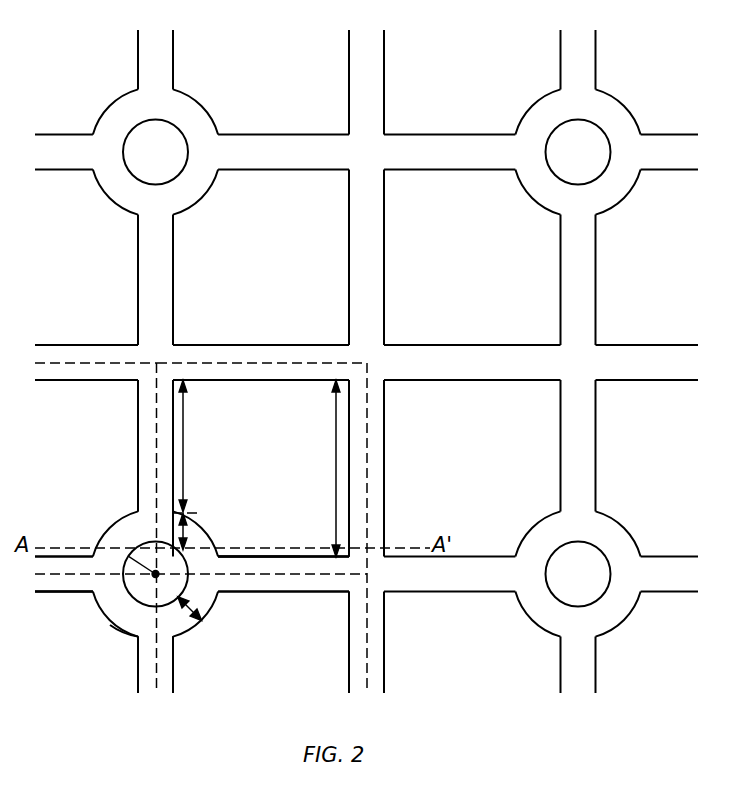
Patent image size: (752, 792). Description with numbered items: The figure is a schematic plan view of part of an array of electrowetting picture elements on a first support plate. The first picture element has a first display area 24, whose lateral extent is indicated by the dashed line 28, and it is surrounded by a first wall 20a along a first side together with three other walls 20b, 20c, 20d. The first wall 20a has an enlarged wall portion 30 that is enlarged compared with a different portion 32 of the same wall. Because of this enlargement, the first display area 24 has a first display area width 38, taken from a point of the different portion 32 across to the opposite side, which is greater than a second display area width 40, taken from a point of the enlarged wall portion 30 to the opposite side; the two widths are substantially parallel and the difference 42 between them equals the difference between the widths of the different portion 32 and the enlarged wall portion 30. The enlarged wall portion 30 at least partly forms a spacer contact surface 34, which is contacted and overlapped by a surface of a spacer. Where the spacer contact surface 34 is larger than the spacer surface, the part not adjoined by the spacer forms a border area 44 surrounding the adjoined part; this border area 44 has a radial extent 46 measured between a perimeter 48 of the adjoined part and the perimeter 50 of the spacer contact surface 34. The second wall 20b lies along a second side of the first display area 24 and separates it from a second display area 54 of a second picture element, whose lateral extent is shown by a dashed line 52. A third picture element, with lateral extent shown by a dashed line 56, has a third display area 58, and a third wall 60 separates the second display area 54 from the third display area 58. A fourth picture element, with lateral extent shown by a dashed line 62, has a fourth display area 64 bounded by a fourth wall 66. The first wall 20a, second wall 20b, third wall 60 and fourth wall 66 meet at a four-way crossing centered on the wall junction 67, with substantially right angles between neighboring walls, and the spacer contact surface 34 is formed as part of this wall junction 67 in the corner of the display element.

The first wall 20a is at (308, 556).
The second wall 20b is at (173, 418).
The third wall of first display area 20c is at (238, 382).
The fourth wall of first display area 20d is at (350, 436).
The first display area 24 is at (300, 466).
The dashed line 28 is at (247, 362).
The enlarged wall portion 30 is at (205, 527).
The different portion of the first wall 32 is at (258, 556).
The spacer contact surface 34 is at (175, 638).
The first display area width 38 is at (333, 410).
The second display area width 40 is at (185, 456).
The difference between display area widths 42 is at (178, 548).
The border area 44 is at (190, 629).
The radial extent 46 is at (200, 608).
The perimeter of the spacer-adjoined part 48 is at (113, 625).
The perimeter of the spacer contact surface 50 is at (125, 633).
The dashed line 52 is at (73, 362).
The second display area 54 is at (83, 466).
The dashed line 56 is at (138, 690).
The third display area 58 is at (70, 684).
The third wall 60 is at (52, 592).
The dashed line 62 is at (367, 627).
The lower cell region 64 is at (307, 684).
The fourth wall 66 is at (174, 685).
The wall junction 67 is at (129, 556).